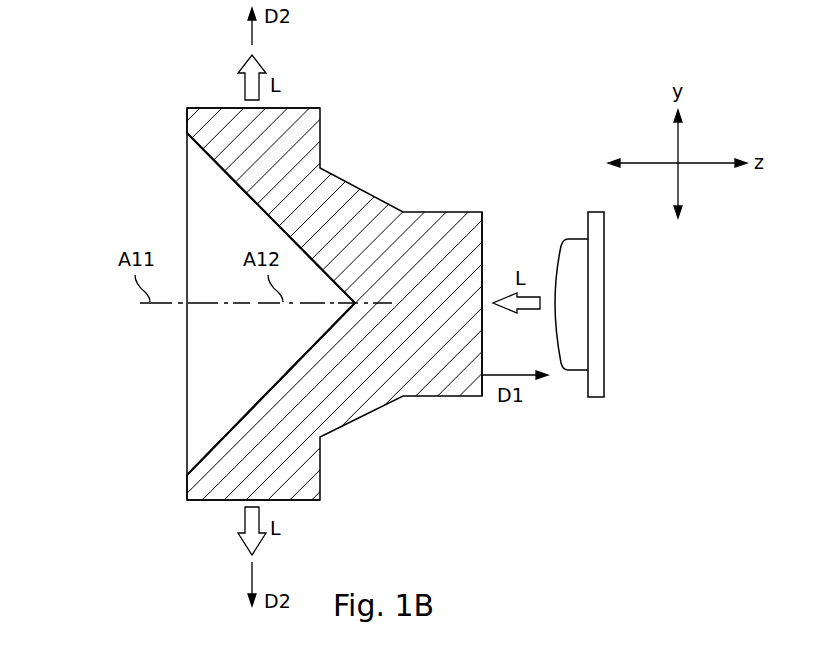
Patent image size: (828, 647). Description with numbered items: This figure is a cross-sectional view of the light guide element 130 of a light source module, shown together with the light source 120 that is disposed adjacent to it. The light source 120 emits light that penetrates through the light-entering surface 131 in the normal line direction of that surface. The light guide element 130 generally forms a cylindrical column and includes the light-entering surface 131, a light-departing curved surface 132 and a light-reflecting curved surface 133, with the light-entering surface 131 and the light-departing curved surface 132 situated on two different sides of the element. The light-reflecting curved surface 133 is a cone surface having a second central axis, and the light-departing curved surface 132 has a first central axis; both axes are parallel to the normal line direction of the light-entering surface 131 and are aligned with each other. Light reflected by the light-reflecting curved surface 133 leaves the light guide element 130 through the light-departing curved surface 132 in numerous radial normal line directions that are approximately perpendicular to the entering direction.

The light source 120 is at (597, 283).
The light guide element 130 is at (365, 188).
The light-entering surface 131 is at (483, 237).
The light-departing curved surface 132 is at (300, 107).
The light-reflecting curved surface 133 is at (201, 437).